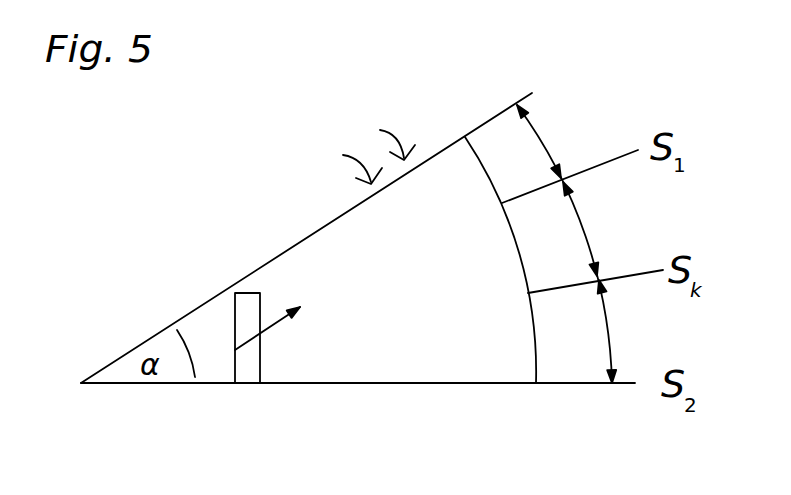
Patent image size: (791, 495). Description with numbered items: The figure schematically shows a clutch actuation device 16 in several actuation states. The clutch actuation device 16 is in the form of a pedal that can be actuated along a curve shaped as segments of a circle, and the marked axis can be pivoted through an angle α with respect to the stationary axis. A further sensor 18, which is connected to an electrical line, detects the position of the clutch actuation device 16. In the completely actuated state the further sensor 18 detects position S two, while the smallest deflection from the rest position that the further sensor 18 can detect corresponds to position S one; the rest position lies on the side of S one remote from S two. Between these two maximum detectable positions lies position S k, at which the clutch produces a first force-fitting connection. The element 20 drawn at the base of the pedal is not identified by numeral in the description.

The clutch actuation device 16 is at (155, 233).
The further sensor 18 is at (261, 333).
The element on base of wedge 20 is at (245, 388).